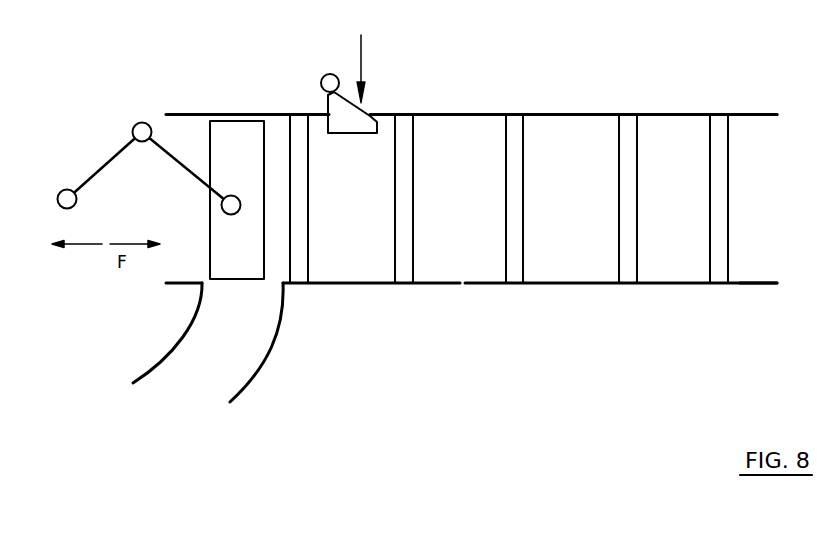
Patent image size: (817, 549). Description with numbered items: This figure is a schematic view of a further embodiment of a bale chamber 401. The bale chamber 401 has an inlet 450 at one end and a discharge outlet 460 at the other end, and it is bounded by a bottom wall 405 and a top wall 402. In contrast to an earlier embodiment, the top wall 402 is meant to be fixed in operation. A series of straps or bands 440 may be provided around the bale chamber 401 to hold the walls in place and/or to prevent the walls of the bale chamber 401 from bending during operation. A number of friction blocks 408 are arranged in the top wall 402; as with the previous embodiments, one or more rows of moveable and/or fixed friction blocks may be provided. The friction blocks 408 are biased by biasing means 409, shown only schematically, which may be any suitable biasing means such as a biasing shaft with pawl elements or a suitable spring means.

The bale chamber 401 is at (352, 263).
The top wall 402 is at (578, 115).
The bottom wall 405 is at (462, 283).
The friction blocks 408 is at (358, 121).
The biasing means 409 is at (377, 68).
The straps or bands 440 is at (720, 123).
The inlet 450 is at (248, 360).
The discharge outlet 460 is at (757, 137).